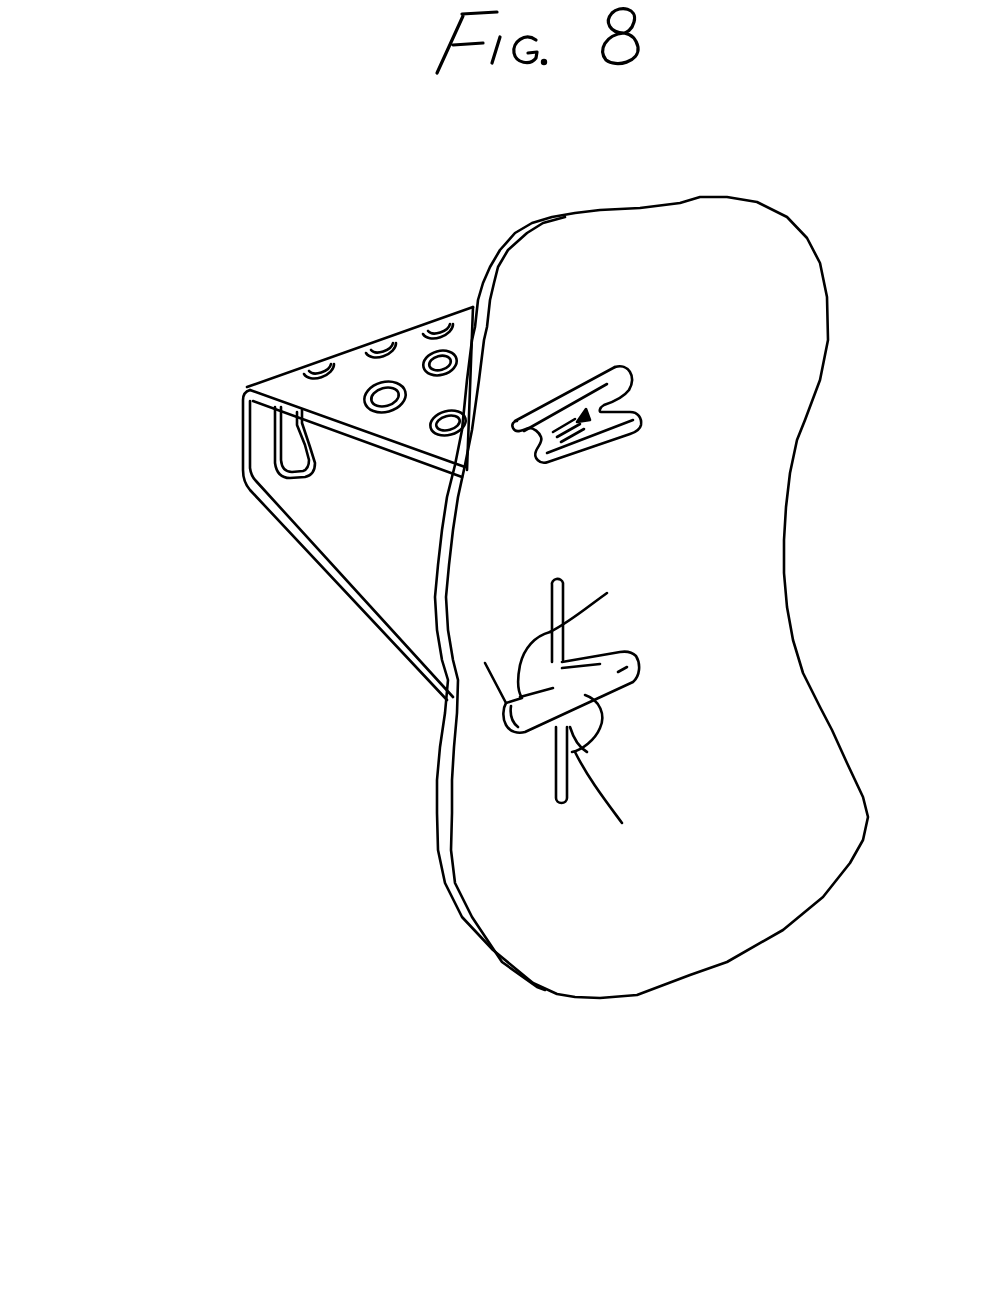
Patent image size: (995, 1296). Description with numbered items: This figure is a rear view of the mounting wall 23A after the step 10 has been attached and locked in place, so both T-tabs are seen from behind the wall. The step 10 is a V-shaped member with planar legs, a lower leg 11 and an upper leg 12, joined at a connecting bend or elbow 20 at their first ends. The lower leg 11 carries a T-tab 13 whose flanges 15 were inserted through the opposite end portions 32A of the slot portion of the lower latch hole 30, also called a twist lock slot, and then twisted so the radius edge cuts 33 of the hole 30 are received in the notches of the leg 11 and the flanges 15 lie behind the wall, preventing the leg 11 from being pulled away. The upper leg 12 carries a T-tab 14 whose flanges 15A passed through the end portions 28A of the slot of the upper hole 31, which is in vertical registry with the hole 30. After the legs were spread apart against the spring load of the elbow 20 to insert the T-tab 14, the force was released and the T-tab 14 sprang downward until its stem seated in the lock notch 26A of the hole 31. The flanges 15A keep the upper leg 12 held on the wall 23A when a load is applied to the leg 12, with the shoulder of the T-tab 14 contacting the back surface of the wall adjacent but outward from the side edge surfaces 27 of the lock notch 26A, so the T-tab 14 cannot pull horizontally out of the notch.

The step 10 is at (262, 551).
The lower leg 11 is at (385, 583).
The upper leg 12 is at (403, 367).
The T-tab 13 is at (553, 690).
The T-tab 14 is at (583, 427).
The flanges 15 is at (510, 580).
The flanges 15A is at (637, 413).
The elbow 20 is at (257, 422).
The mounting wall 23A is at (600, 910).
The lock notch 26A is at (590, 410).
The side edge surface 27 is at (558, 413).
The end portions 28A is at (523, 413).
The latch hole 30 is at (570, 725).
The upper hole 31 is at (628, 376).
The end portions 32A is at (563, 583).
The radius edge cuts 33 is at (610, 704).